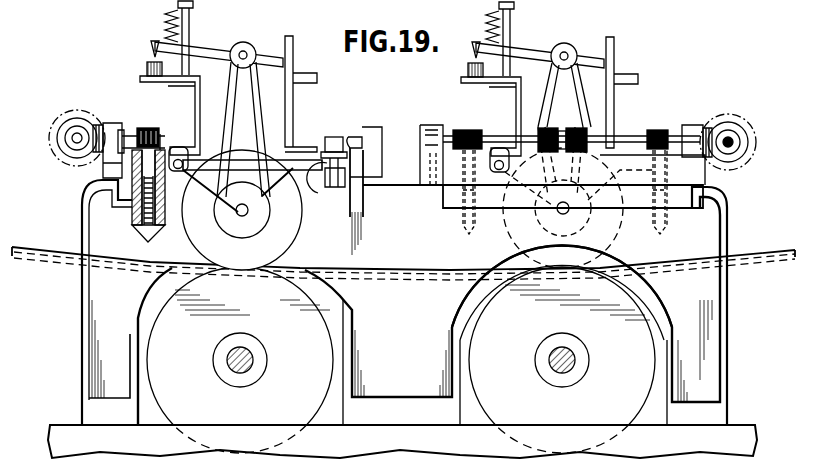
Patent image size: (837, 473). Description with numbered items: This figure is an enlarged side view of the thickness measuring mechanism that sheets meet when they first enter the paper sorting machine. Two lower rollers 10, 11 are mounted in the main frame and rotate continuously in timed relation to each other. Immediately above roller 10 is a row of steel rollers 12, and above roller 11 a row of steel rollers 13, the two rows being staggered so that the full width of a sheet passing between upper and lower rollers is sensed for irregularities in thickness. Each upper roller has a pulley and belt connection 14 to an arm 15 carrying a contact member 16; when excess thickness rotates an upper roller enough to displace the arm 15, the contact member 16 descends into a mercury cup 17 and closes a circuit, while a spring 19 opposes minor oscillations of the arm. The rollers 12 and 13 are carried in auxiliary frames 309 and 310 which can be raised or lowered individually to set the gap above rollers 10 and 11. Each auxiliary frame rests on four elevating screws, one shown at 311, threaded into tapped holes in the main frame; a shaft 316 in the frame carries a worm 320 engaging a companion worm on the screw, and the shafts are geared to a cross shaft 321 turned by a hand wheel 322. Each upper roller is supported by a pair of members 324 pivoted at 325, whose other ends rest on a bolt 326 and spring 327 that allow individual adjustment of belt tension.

The roller 10 is at (320, 348).
The roller 11 is at (487, 335).
The row of steel rollers 12 is at (283, 237).
The row of steel rollers 13 is at (520, 258).
The pulley and belt connection 14 is at (262, 104).
The arm 15 is at (211, 50).
The contact member 16 is at (151, 51).
The mercury cup 17 is at (147, 70).
The spring 19 is at (164, 24).
The auxiliary frame 309 is at (289, 110).
The auxiliary frame 310 is at (698, 128).
The elevating screw 311 is at (130, 212).
The shaft 316 is at (145, 118).
The worm 320 is at (147, 132).
The cross shaft 321 is at (76, 139).
The hand wheel 322 is at (60, 117).
The member 324 is at (203, 195).
The pivot 325 is at (178, 158).
The bolt 326 is at (336, 138).
The spring 327 is at (320, 187).